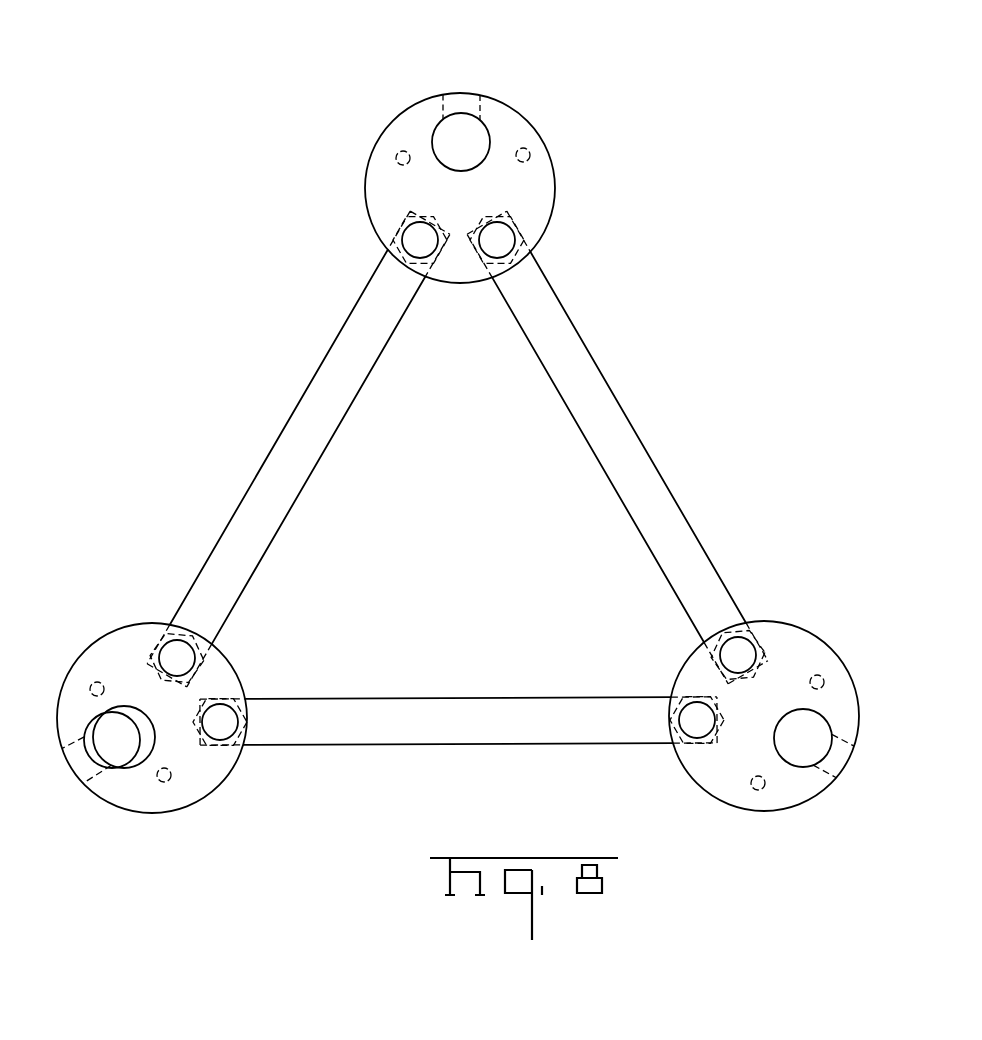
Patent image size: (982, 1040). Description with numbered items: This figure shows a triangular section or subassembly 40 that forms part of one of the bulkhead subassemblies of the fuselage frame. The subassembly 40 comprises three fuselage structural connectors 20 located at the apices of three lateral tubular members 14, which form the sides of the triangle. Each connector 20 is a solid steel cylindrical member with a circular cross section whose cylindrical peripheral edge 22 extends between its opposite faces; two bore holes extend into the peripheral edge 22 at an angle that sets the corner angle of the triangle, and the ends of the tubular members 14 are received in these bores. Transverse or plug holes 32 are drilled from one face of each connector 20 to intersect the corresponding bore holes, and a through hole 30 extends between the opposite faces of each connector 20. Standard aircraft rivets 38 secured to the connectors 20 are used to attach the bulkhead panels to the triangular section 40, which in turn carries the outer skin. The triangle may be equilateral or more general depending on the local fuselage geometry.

The lateral tubular member 14 is at (575, 370).
The fuselage structural connector 20 is at (552, 224).
The cylindrical peripheral edge 22 is at (415, 98).
The through hole 30 is at (463, 140).
The transverse or plug hole 32 is at (498, 252).
The aircraft rivet 38 is at (405, 152).
The triangular section or subassembly 40 is at (252, 406).